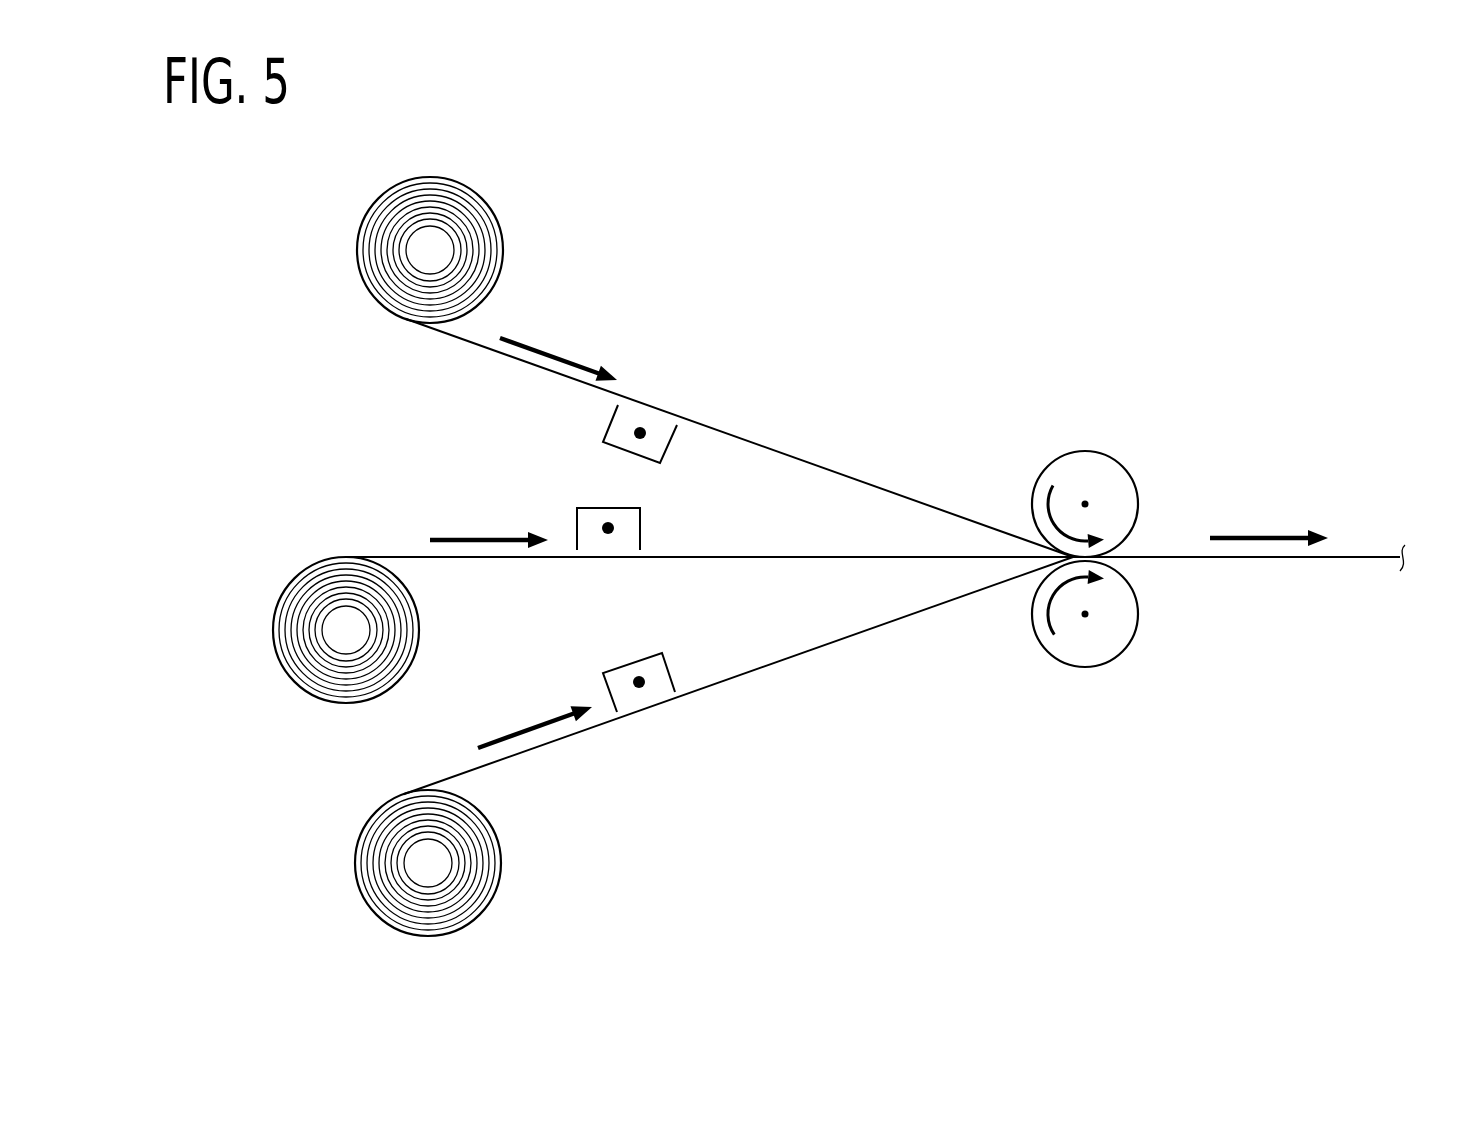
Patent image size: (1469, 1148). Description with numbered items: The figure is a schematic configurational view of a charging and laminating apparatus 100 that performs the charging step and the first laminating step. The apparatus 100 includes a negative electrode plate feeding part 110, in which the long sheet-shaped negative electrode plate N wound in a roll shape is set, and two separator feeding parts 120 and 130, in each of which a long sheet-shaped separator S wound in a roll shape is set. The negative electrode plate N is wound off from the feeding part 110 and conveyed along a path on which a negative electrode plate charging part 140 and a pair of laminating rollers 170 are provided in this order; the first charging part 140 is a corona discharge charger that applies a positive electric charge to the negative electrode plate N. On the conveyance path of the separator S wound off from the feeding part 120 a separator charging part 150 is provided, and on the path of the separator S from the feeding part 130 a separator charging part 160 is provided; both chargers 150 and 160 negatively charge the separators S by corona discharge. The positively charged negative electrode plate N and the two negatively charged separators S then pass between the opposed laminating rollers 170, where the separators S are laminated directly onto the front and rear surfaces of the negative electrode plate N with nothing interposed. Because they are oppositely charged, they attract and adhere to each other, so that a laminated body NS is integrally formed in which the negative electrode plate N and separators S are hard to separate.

The charging and laminating apparatus 100 is at (983, 330).
The negative electrode plate feeding part 110 is at (289, 584).
The separator feeding part 120 is at (358, 248).
The separator feeding part 130 is at (355, 872).
The negative electrode plate charging part 140 is at (577, 507).
The separator charging part 150 is at (607, 424).
The separator charging part 160 is at (603, 673).
The laminating rollers 170 is at (1097, 451).
The negative electrode plate N is at (728, 558).
The separator S is at (775, 450).
The laminated body NS is at (1365, 557).